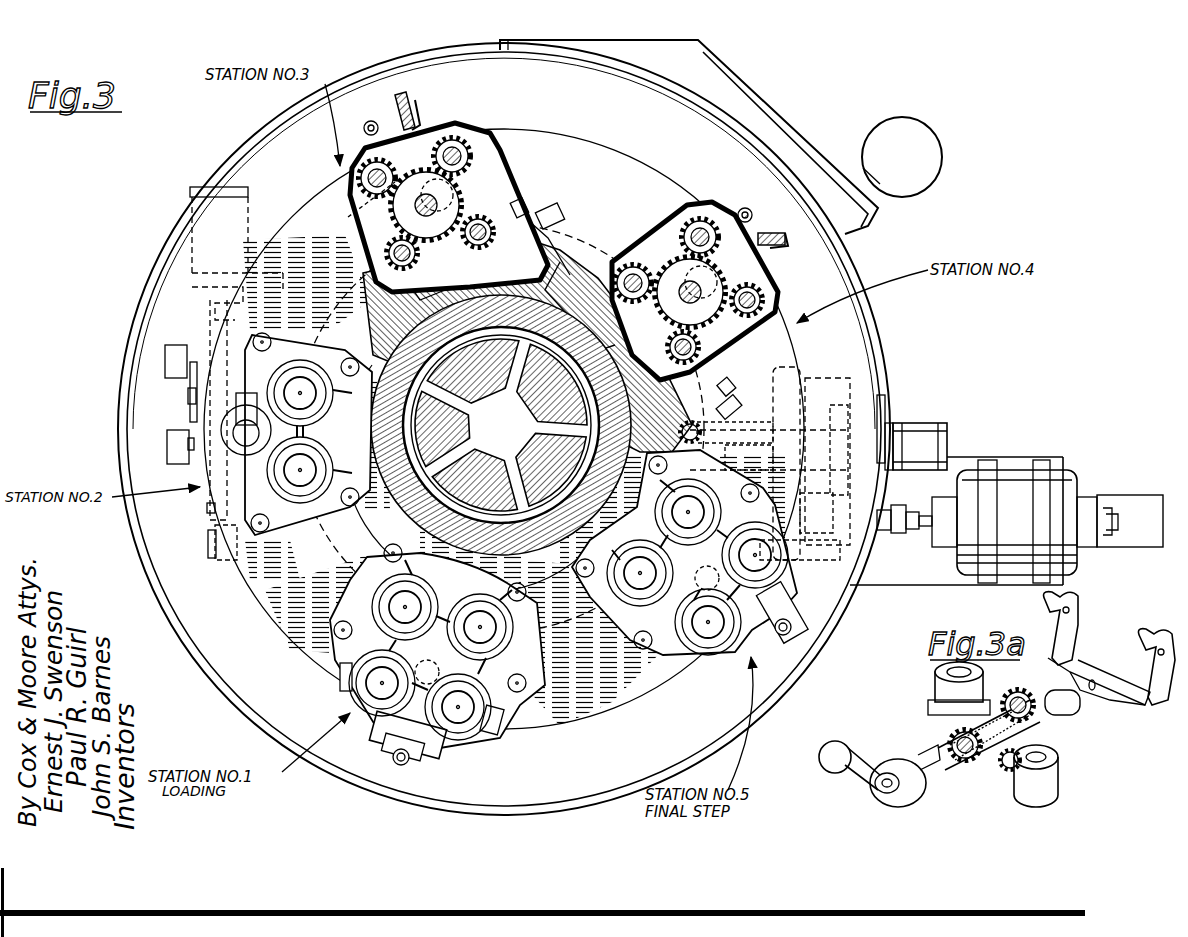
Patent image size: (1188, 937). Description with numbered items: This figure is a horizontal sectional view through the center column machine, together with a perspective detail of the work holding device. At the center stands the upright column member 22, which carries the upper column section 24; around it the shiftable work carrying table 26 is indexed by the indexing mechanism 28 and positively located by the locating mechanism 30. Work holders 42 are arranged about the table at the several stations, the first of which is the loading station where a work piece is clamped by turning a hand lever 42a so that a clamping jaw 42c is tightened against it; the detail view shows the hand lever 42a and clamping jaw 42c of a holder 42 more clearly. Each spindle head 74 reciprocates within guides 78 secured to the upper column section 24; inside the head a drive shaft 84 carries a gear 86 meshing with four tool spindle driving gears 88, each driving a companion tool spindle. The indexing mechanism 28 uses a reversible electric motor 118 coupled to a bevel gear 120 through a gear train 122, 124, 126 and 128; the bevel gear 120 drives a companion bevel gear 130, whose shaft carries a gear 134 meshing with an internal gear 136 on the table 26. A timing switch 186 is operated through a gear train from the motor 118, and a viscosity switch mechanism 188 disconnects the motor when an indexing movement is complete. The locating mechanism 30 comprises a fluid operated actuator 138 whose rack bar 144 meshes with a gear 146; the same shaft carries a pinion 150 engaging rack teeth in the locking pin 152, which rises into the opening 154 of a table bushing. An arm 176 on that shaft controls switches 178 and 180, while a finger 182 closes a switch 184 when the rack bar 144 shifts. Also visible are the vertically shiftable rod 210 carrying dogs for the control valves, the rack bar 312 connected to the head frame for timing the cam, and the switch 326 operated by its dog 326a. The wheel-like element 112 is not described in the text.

In FIG. 3, the upright column member 22 is at (416, 507).
In FIG. 3, the upper column section 24 is at (348, 312).
In FIG. 3, the work carrying table 26 is at (592, 700).
In FIG. 3, the indexing mechanism 28 is at (895, 407).
In FIG. 3, the locating mechanism 30 is at (190, 285).
In FIG. 3, the holder 42 is at (303, 532).
In FIG. 3A, the holder 42 is at (1103, 757).
In FIG. 3, the hand lever 42a is at (395, 762).
In FIG. 3A, the hand lever 42a is at (840, 750).
In FIG. 3A, the clamping jaw 42c is at (1075, 626).
In FIG. 3, the spindle head 74 is at (502, 142).
In FIG. 3, the guides 78 is at (566, 262).
In FIG. 3, the drive shaft 84 is at (448, 200).
In FIG. 3, the gear 86 is at (488, 167).
In FIG. 3, the tool spindle driving gears 88 is at (392, 163).
In FIG. 3, the index wheel 112 is at (530, 398).
In FIG. 3, the reversible electric motor 118 is at (1013, 480).
In FIG. 3, the bevel gear 120 is at (703, 440).
In FIG. 3, the gear of gear train 122 is at (838, 542).
In FIG. 3, the gear of gear train 124 is at (830, 420).
In FIG. 3, the gear of gear train 126 is at (850, 507).
In FIG. 3, the gear of gear train 128 is at (808, 392).
In FIG. 3, the companion bevel gear 130 is at (527, 550).
In FIG. 3, the gear 134 is at (712, 447).
In FIG. 3, the internal gear 136 is at (700, 475).
In FIG. 3, the fluid operated actuator 138 is at (195, 235).
In FIG. 3, the rack bar 144 is at (210, 328).
In FIG. 3, the gear 146 is at (190, 412).
In FIG. 3, the pinion 150 is at (246, 396).
In FIG. 3, the locating or locking pin 152 is at (246, 445).
In FIG. 3, the opening 154 is at (348, 217).
In FIG. 3, the arm 176 is at (193, 392).
In FIG. 3, the switch 178 is at (168, 347).
In FIG. 3, the limit switch 180 is at (180, 463).
In FIG. 3, the finger 182 is at (207, 508).
In FIG. 3, the switch 184 is at (208, 544).
In FIG. 3, the timing switch 186 is at (932, 440).
In FIG. 3, the viscosity switch mechanism 188 is at (1140, 510).
In FIG. 3, the vertically shiftable rod 210 is at (410, 95).
In FIG. 3, the rack bar 312 is at (369, 121).
In FIG. 3, the switch 326 is at (552, 209).
In FIG. 3, the dog 326a is at (537, 200).